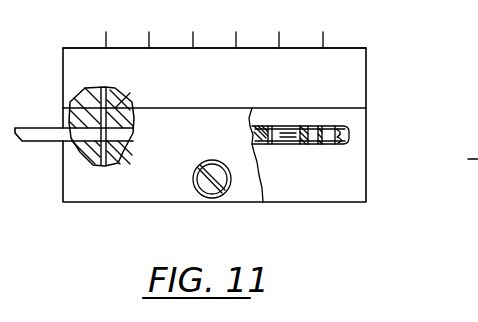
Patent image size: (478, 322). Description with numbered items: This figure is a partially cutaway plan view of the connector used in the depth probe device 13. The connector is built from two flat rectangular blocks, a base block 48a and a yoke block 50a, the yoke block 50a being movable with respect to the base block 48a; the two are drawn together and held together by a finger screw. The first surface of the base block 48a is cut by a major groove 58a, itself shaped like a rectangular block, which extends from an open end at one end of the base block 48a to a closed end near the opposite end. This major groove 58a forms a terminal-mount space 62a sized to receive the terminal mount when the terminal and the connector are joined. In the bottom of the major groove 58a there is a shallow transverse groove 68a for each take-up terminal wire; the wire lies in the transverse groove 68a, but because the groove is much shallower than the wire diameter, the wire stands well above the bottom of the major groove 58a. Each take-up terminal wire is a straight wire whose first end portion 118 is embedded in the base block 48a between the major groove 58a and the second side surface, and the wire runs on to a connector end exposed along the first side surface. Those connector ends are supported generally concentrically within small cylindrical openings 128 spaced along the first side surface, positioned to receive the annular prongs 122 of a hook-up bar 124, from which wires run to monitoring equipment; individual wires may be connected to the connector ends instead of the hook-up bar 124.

The depth probe device 13 is at (405, 52).
The base block 48a is at (345, 190).
The yoke block 50a is at (165, 187).
The major groove 58a is at (343, 137).
The terminal-mount space 62a is at (335, 144).
The transverse groove 68a is at (133, 133).
The first end portion 118 is at (116, 160).
The annular prong 122 is at (125, 111).
The hook-up bar 124 is at (327, 60).
The cylindrical opening 128 is at (107, 108).